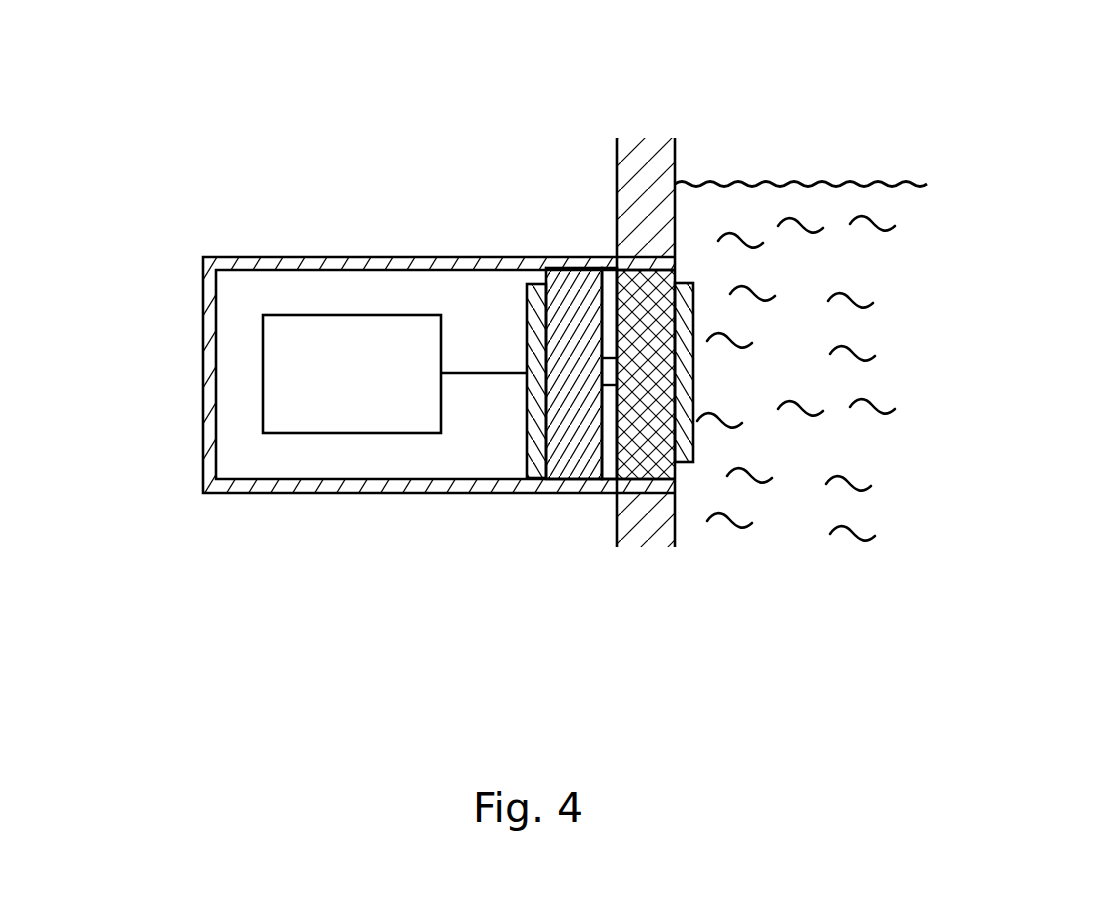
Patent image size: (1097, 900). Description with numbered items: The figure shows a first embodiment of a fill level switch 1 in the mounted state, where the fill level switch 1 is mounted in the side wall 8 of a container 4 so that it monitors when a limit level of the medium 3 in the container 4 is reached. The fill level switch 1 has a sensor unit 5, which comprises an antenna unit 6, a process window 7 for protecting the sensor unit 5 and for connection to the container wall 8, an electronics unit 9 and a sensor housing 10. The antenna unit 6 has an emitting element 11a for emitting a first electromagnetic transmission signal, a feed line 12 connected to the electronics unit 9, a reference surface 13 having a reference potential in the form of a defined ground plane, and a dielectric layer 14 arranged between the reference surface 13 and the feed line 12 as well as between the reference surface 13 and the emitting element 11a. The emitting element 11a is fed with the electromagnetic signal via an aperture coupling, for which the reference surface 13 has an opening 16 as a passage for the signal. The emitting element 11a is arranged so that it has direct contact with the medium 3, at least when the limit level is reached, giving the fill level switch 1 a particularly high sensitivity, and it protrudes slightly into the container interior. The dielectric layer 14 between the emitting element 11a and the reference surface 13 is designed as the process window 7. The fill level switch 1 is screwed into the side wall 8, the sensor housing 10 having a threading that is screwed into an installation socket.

The fill level switch 1 is at (137, 132).
The medium 3 is at (829, 559).
The container 4 is at (761, 84).
The sensor unit 5 is at (367, 206).
The antenna unit 6 is at (555, 566).
The process window 7 is at (651, 455).
The side wall 8 is at (616, 197).
The electronics unit 9 is at (352, 435).
The sensor housing 10 is at (203, 463).
The emitting element 11a is at (694, 298).
The feed line 12 is at (530, 340).
The reference surface 13 is at (665, 458).
The dielectric layer 14 is at (632, 292).
The opening 16 is at (612, 373).